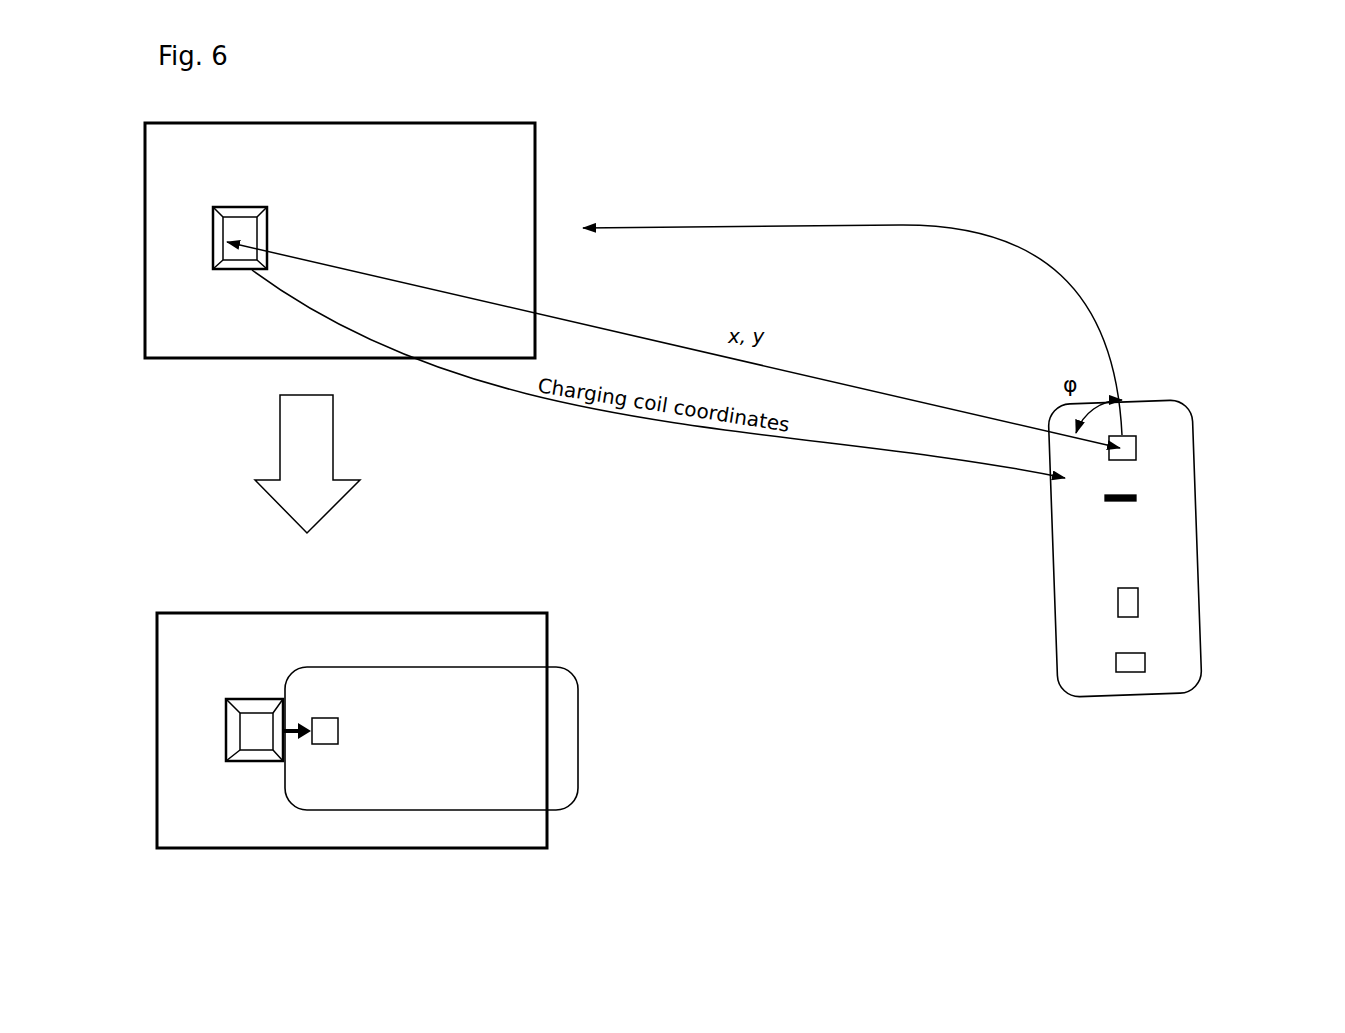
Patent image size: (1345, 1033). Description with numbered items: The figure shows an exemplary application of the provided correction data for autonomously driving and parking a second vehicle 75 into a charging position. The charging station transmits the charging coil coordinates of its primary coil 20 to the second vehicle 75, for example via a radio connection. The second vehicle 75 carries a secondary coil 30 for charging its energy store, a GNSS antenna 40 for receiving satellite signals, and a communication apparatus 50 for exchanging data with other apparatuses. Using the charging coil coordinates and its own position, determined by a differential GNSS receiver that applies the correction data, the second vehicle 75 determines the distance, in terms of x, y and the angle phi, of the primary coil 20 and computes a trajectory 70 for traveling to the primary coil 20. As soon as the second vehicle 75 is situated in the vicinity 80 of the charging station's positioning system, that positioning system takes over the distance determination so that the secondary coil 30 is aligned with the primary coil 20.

The primary coil 20 is at (272, 213).
The secondary coil 30 is at (1185, 410).
The GNSS antenna 40 is at (1138, 603).
The communication apparatus 50 is at (1145, 657).
The trajectory 70 is at (763, 226).
The second vehicle 75 is at (1192, 525).
The vicinity 80 is at (292, 711).